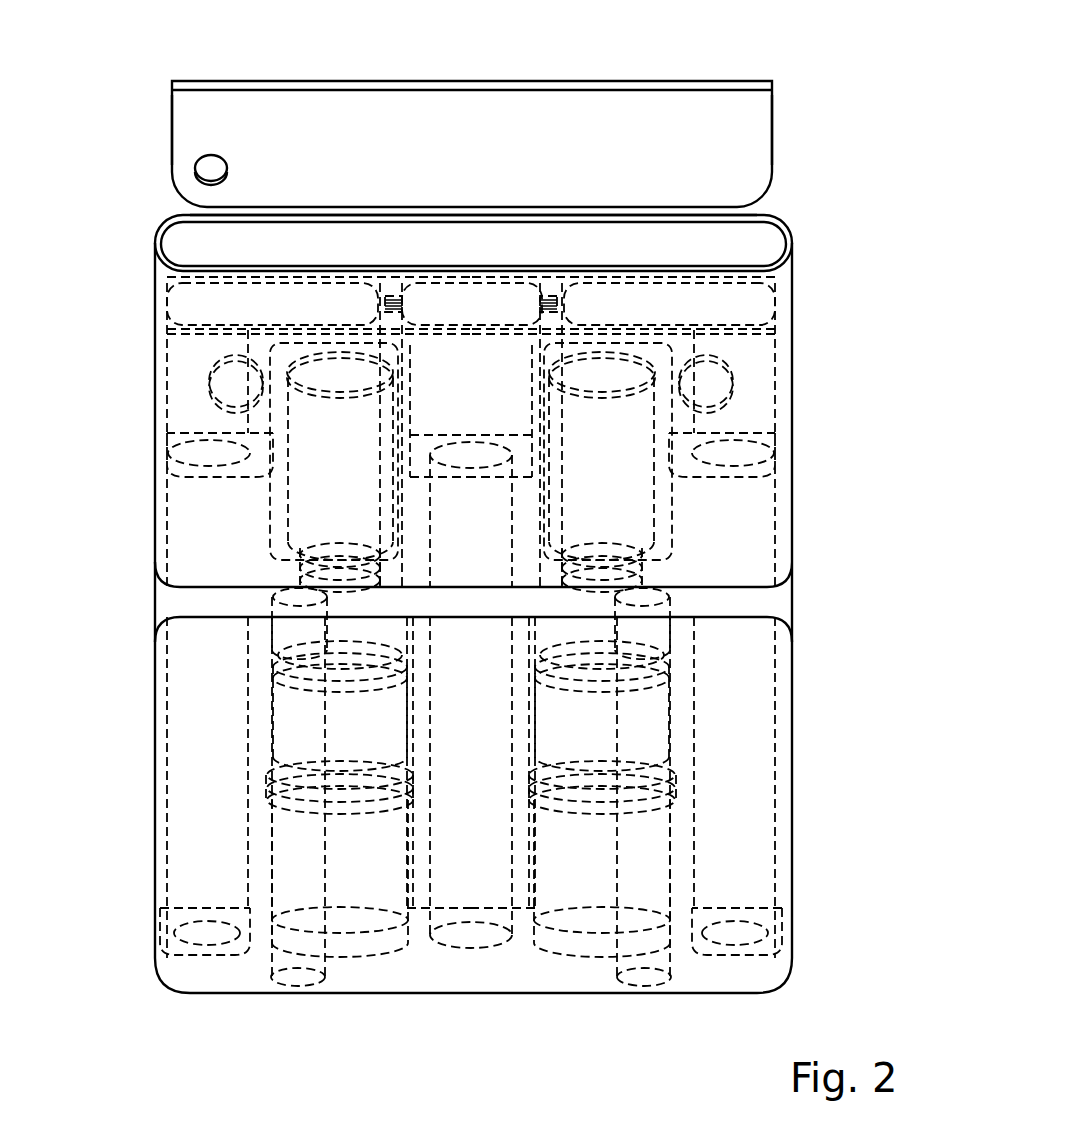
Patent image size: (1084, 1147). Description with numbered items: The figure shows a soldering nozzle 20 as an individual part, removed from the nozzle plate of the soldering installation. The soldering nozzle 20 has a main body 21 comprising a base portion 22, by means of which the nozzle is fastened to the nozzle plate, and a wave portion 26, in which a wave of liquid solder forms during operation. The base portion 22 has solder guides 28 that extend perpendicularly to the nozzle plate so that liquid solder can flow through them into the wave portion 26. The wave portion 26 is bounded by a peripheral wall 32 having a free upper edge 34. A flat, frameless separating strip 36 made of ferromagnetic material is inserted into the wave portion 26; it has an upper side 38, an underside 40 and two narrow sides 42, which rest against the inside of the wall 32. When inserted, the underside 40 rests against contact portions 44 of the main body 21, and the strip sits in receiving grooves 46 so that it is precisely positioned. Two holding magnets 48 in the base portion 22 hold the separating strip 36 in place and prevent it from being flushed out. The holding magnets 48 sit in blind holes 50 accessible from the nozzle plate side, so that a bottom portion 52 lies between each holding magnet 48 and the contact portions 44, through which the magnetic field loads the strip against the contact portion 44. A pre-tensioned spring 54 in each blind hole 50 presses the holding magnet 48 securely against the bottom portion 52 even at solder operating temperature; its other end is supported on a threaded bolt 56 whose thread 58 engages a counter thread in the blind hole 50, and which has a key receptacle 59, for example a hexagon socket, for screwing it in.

The soldering nozzle 20 is at (817, 203).
The main body 21 is at (155, 546).
The base portion 22 is at (897, 478).
The wave portion 26 is at (897, 222).
The solder guide 28 is at (758, 716).
The peripheral wall 32 is at (160, 232).
The free upper edge 34 is at (173, 217).
The separating strip 36 is at (735, 100).
The upper side 38 is at (572, 82).
The underside 40 is at (540, 217).
The narrow side 42 is at (772, 108).
The contact portion 44 is at (640, 348).
The receiving groove 46 is at (537, 295).
The holding magnet 48 is at (310, 496).
The blind hole 50 is at (285, 427).
The bottom portion 52 is at (280, 376).
The pre-tensioned spring 54 is at (660, 562).
The threaded bolt 56 is at (580, 610).
The thread 58 is at (565, 713).
The key receptacle 59 is at (360, 922).